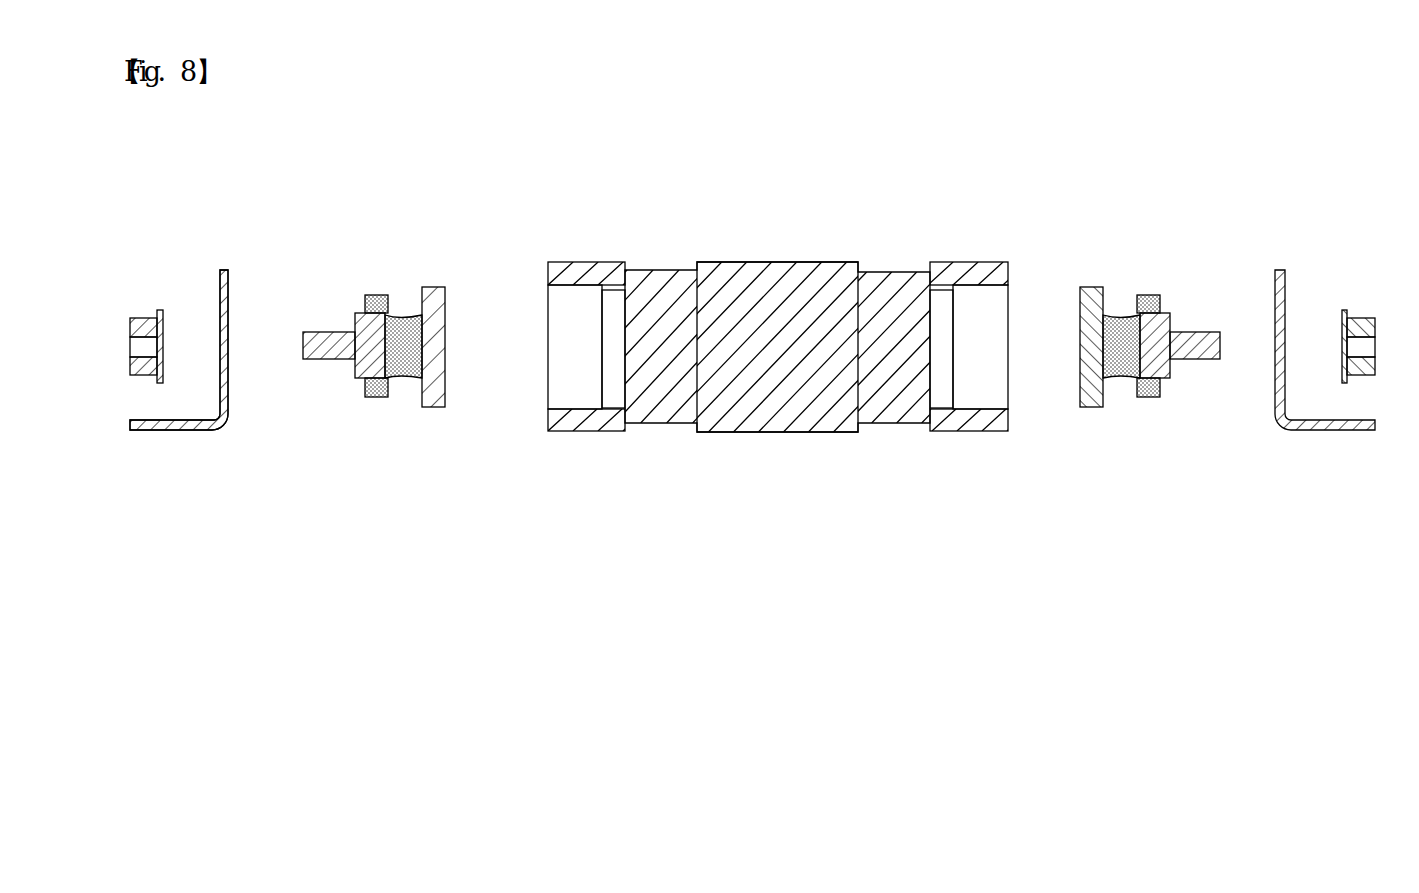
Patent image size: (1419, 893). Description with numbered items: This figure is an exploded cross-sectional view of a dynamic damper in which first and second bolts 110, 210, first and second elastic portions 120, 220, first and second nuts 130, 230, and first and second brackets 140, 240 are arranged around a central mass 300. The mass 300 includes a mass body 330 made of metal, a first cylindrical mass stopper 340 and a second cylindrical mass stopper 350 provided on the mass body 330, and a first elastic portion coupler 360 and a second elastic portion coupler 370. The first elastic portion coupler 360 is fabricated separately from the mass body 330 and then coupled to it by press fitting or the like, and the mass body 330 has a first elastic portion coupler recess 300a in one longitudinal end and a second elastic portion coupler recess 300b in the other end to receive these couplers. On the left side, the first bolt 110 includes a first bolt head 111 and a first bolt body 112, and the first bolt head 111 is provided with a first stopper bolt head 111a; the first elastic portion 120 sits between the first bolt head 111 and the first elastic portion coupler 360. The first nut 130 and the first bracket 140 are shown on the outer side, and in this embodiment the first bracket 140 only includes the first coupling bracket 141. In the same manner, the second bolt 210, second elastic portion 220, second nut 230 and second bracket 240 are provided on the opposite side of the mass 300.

The first bolt 110 is at (319, 323).
The first bolt head 111 is at (364, 330).
The first stopper bolt head 111a is at (372, 387).
The first bolt body 112 is at (316, 342).
The first elastic portion 120 is at (400, 342).
The first nut 130 is at (150, 318).
The first bracket 140 is at (179, 445).
The first coupling bracket 141 is at (179, 350).
The second bolt 210 is at (1190, 355).
The second elastic portion 220 is at (1122, 352).
The second nut 230 is at (1352, 318).
The second bracket 240 is at (1337, 445).
The mass 300 is at (776, 334).
The first elastic portion coupler recess 300a is at (620, 353).
The second elastic portion coupler recess 300b is at (936, 352).
The mass body 330 is at (772, 357).
The first cylindrical mass stopper 340 is at (580, 262).
The second cylindrical mass stopper 350 is at (968, 262).
The first elastic portion coupler 360 is at (432, 300).
The second elastic portion coupler 370 is at (1090, 308).